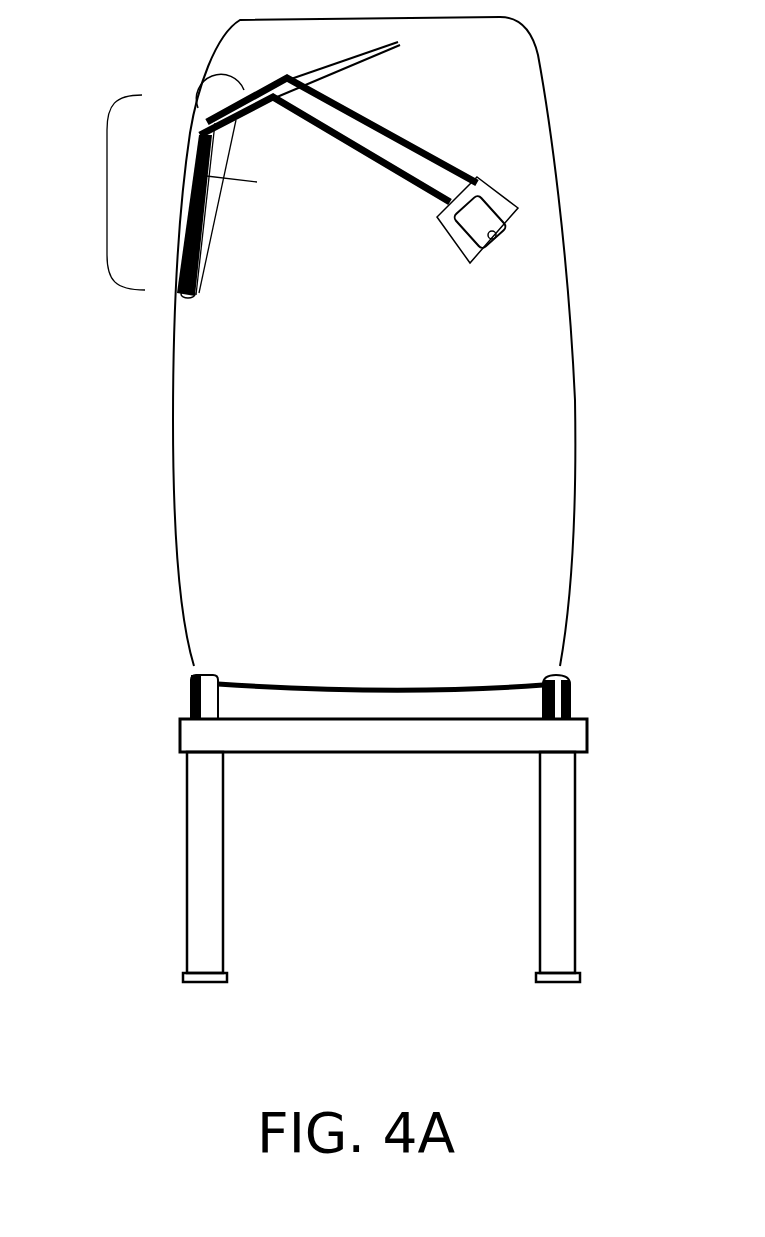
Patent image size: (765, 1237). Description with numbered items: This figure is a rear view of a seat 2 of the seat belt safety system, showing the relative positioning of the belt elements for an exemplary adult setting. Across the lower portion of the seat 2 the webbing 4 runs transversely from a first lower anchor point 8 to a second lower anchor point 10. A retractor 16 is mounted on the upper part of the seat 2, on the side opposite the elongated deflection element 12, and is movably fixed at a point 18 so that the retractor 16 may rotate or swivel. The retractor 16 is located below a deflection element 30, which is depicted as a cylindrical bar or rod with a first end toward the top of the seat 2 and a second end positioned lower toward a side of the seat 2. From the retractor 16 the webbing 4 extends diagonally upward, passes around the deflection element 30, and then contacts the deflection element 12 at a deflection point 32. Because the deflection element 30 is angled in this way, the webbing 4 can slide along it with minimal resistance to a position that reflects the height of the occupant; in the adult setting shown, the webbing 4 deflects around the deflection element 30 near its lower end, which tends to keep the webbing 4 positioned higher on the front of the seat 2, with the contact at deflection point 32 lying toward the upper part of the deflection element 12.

The seat 2 is at (167, 403).
The webbing 4 is at (383, 142).
The first lower anchor point 8 is at (185, 712).
The second lower anchor point 10 is at (573, 695).
The deflection element 12 is at (102, 187).
The retractor 16 is at (455, 245).
The movable fixing point 18 is at (492, 240).
The deflection element 30 is at (340, 70).
The deflection point 32 is at (210, 115).